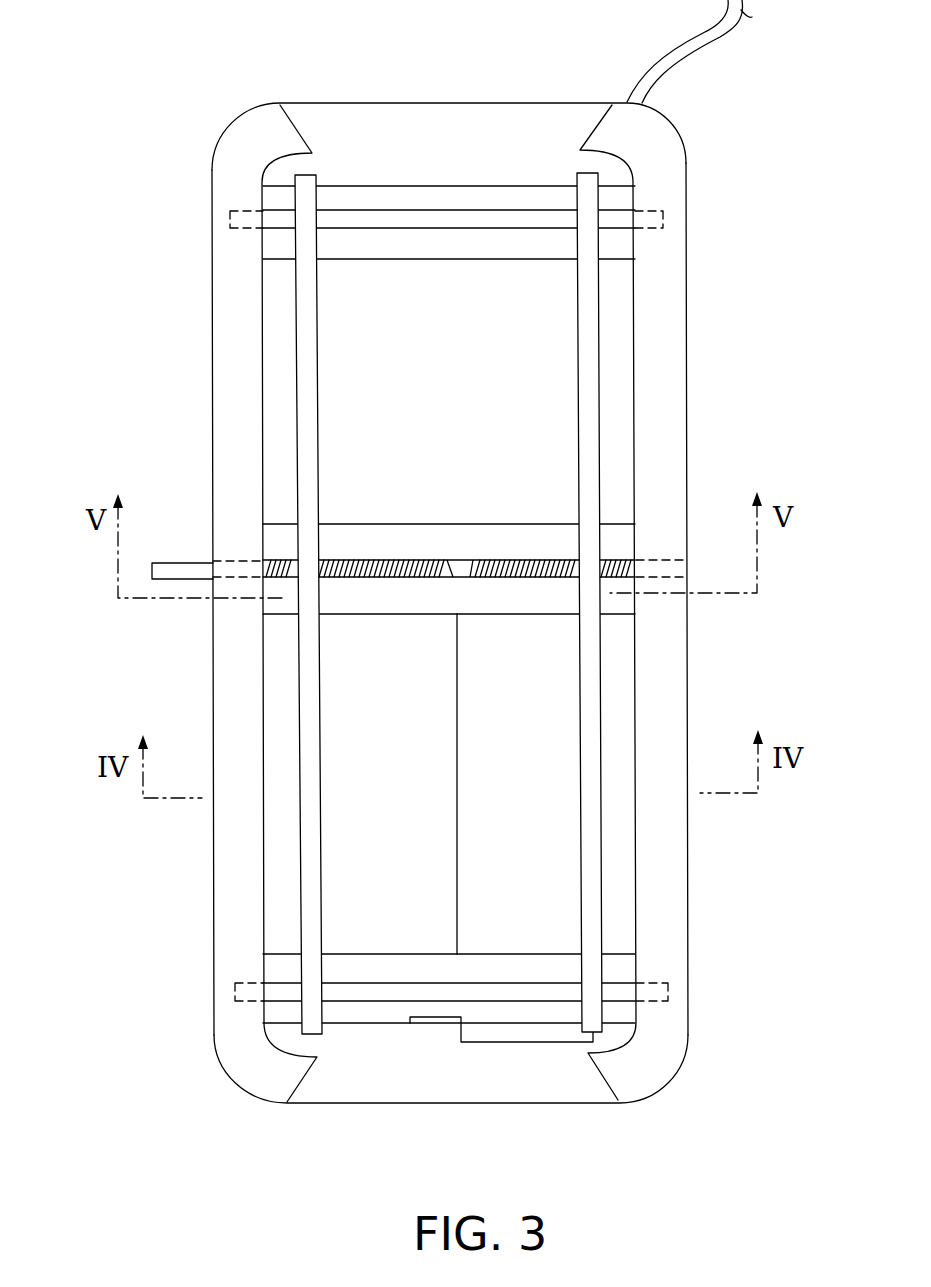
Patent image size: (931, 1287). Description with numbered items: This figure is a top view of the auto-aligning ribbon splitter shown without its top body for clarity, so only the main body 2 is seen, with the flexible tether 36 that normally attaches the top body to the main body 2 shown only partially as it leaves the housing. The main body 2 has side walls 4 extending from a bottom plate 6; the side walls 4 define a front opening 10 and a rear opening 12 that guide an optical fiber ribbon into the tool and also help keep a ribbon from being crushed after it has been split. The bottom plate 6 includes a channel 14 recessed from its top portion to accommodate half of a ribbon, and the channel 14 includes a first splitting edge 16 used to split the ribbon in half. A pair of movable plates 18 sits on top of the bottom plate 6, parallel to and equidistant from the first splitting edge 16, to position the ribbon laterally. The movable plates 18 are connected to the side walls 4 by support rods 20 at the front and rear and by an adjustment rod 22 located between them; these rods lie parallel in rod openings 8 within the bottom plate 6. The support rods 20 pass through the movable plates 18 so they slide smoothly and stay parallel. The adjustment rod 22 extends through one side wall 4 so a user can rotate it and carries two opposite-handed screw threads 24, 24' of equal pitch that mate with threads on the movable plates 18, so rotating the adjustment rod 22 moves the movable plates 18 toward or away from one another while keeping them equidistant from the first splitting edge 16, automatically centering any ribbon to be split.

The main body 2 is at (193, 880).
The side walls 4 is at (225, 682).
The bottom plate 6 is at (613, 170).
The rod openings 8 is at (622, 240).
The front opening 10 is at (428, 1085).
The rear opening 12 is at (482, 122).
The channel 14 is at (545, 850).
The first splitting edge 16 is at (458, 918).
The movable plates 18 is at (311, 913).
The support rods 20 is at (277, 222).
The adjustment rod 22 is at (177, 568).
The screw threads 24 is at (406, 532).
The screw threads 24' is at (647, 531).
The flexible tether 36 is at (703, 47).